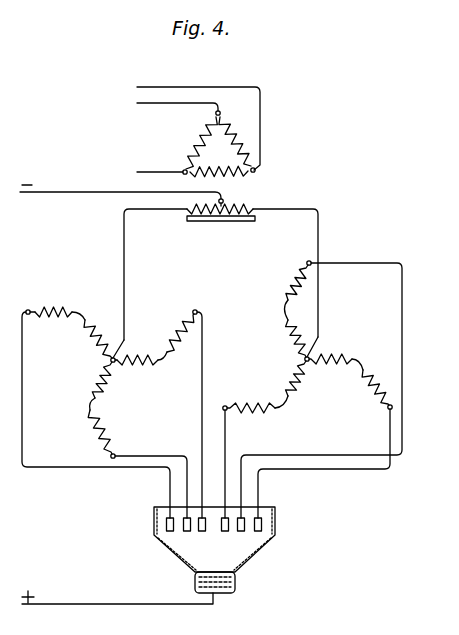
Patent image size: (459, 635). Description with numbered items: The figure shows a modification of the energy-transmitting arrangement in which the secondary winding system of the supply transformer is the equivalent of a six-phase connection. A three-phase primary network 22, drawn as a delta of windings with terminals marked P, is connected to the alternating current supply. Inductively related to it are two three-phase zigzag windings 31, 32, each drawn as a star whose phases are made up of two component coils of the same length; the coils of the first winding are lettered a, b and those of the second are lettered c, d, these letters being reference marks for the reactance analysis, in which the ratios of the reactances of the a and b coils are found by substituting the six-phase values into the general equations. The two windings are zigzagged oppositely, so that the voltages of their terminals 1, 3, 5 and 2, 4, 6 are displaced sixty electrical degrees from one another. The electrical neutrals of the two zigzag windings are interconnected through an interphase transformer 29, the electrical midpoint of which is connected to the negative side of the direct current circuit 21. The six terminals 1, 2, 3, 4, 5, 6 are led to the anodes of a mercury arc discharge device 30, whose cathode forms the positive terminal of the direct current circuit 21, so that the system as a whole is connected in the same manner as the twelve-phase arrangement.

The terminal 1 is at (194, 310).
The terminal 2 is at (382, 410).
The terminal 3 is at (116, 455).
The terminal 4 is at (228, 405).
The terminal 5 is at (26, 310).
The terminal 6 is at (307, 261).
The direct current circuit 21 is at (74, 192).
The three-phase primary network 22 is at (219, 144).
The interphase transformer 29 is at (238, 223).
The mercury arc discharge device 30 is at (278, 521).
The three-phase zigzag winding 31 is at (111, 382).
The three-phase zigzag winding 32 is at (307, 337).
The primary winding terminal P is at (194, 140).
The component winding element a is at (126, 357).
The component winding element b is at (86, 361).
The component winding element c is at (308, 368).
The component winding element d is at (384, 377).